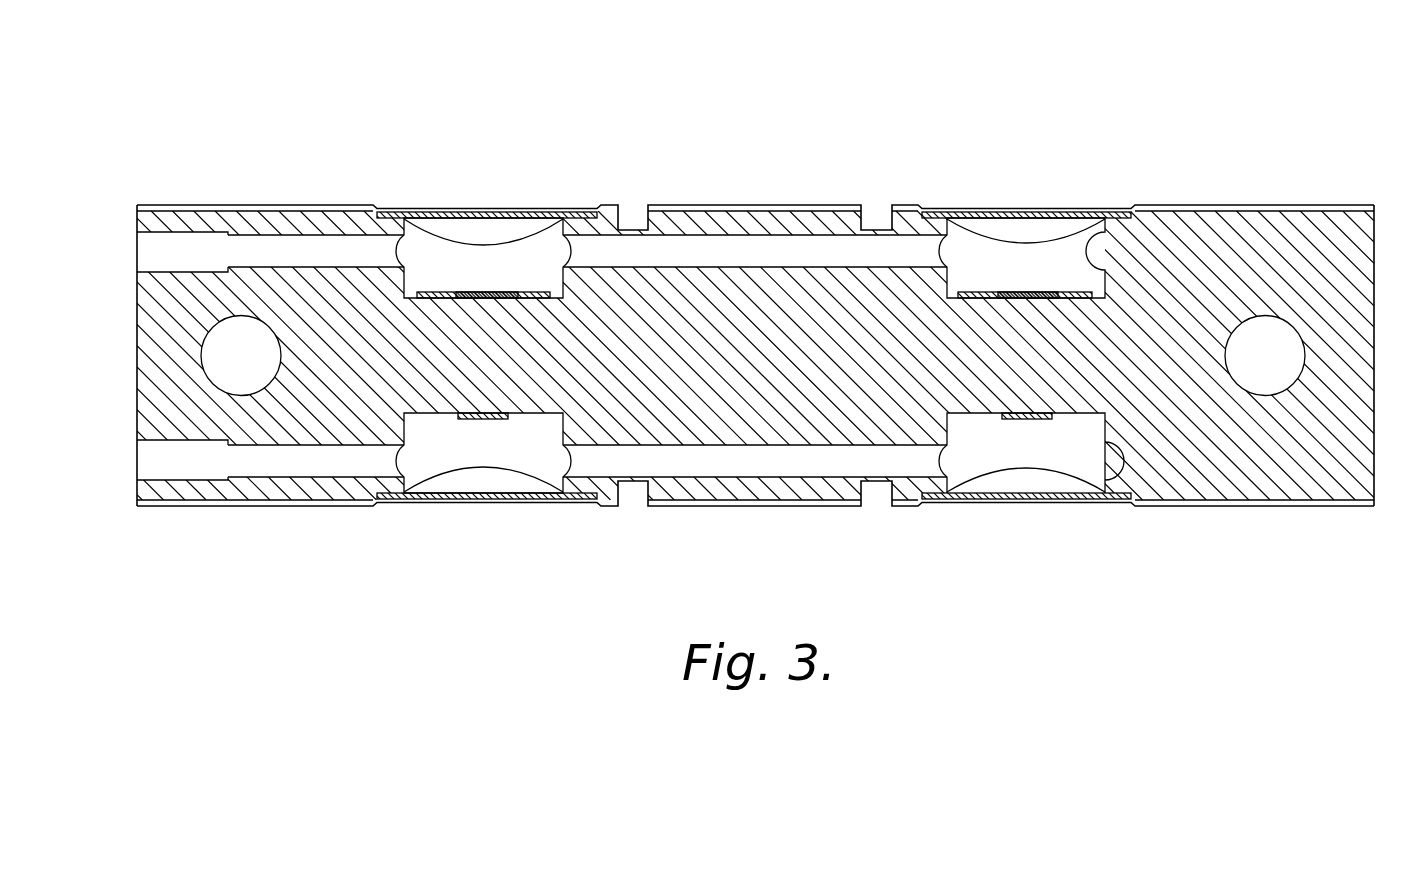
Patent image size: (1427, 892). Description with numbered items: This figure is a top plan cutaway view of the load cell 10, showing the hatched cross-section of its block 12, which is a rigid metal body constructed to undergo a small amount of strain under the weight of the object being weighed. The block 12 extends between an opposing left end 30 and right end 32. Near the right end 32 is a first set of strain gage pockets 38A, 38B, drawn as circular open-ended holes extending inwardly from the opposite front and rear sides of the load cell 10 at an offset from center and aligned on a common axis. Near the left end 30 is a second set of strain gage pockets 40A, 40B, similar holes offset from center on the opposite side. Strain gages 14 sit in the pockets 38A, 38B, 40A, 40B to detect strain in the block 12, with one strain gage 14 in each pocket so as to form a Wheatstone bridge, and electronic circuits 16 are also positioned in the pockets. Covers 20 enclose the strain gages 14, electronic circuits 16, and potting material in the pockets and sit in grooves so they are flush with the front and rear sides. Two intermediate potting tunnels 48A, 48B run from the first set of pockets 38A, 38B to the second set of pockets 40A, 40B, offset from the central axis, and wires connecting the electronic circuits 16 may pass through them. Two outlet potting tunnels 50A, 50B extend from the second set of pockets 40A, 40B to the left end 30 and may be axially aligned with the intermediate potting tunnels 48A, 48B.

The load cell 10 is at (357, 141).
The block 12 is at (303, 285).
The strain gages 14 is at (478, 298).
The electronic circuits 16 is at (517, 298).
The covers 20 is at (555, 214).
The left end 30 is at (118, 330).
The right end 32 is at (1396, 246).
The first strain gage pocket 38A is at (1053, 465).
The first strain gage pocket 38B is at (1075, 245).
The second strain gage pocket 40A is at (452, 472).
The second strain gage pocket 40B is at (437, 247).
The intermediate potting tunnel 48A is at (722, 460).
The intermediate potting tunnel 48B is at (700, 258).
The outlet potting tunnel 50A is at (160, 467).
The outlet potting tunnel 50B is at (152, 242).